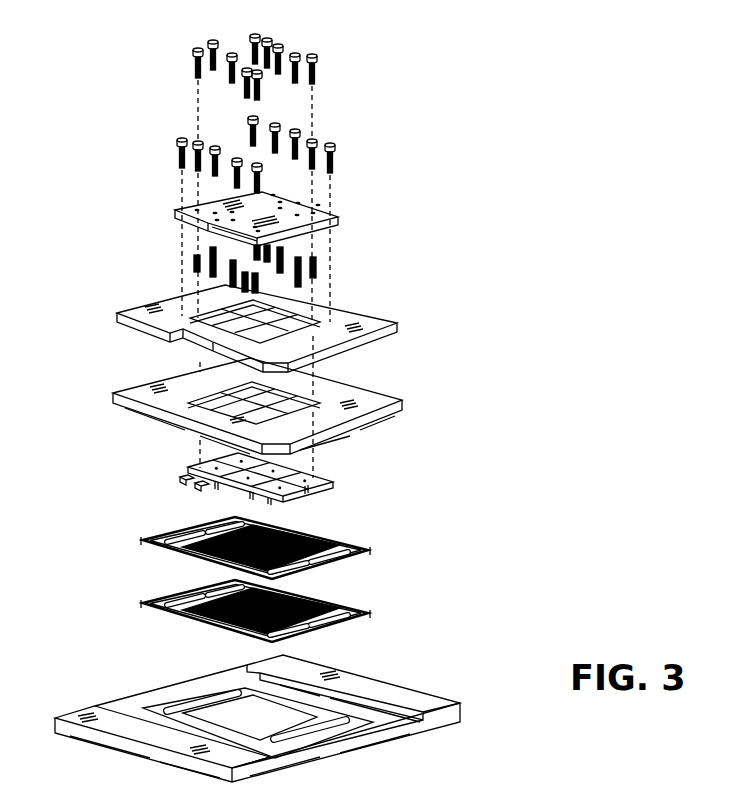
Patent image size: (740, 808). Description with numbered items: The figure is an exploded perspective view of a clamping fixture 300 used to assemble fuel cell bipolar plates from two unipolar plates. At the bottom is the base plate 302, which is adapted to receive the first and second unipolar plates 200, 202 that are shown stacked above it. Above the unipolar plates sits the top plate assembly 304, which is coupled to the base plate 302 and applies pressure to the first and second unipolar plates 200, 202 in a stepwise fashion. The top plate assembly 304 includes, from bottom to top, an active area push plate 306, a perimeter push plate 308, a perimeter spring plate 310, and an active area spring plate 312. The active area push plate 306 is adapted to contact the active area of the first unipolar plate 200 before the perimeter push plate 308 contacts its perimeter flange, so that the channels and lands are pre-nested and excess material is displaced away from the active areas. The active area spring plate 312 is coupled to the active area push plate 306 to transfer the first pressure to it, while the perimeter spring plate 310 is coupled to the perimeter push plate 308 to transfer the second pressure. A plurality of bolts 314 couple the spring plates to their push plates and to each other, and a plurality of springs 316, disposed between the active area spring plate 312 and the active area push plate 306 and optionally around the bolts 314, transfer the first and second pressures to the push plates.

The clamping fixture 300 is at (440, 82).
The top plate assembly 304 is at (118, 185).
The plurality of bolts 314 is at (183, 93).
The active area spring plate 312 is at (318, 213).
The plurality of springs 316 is at (348, 257).
The perimeter spring plate 310 is at (367, 323).
The perimeter push plate 308 is at (378, 403).
The active area push plate 306 is at (333, 484).
The first unipolar plate 200 is at (368, 552).
The second unipolar plate 202 is at (368, 615).
The base plate 302 is at (405, 733).